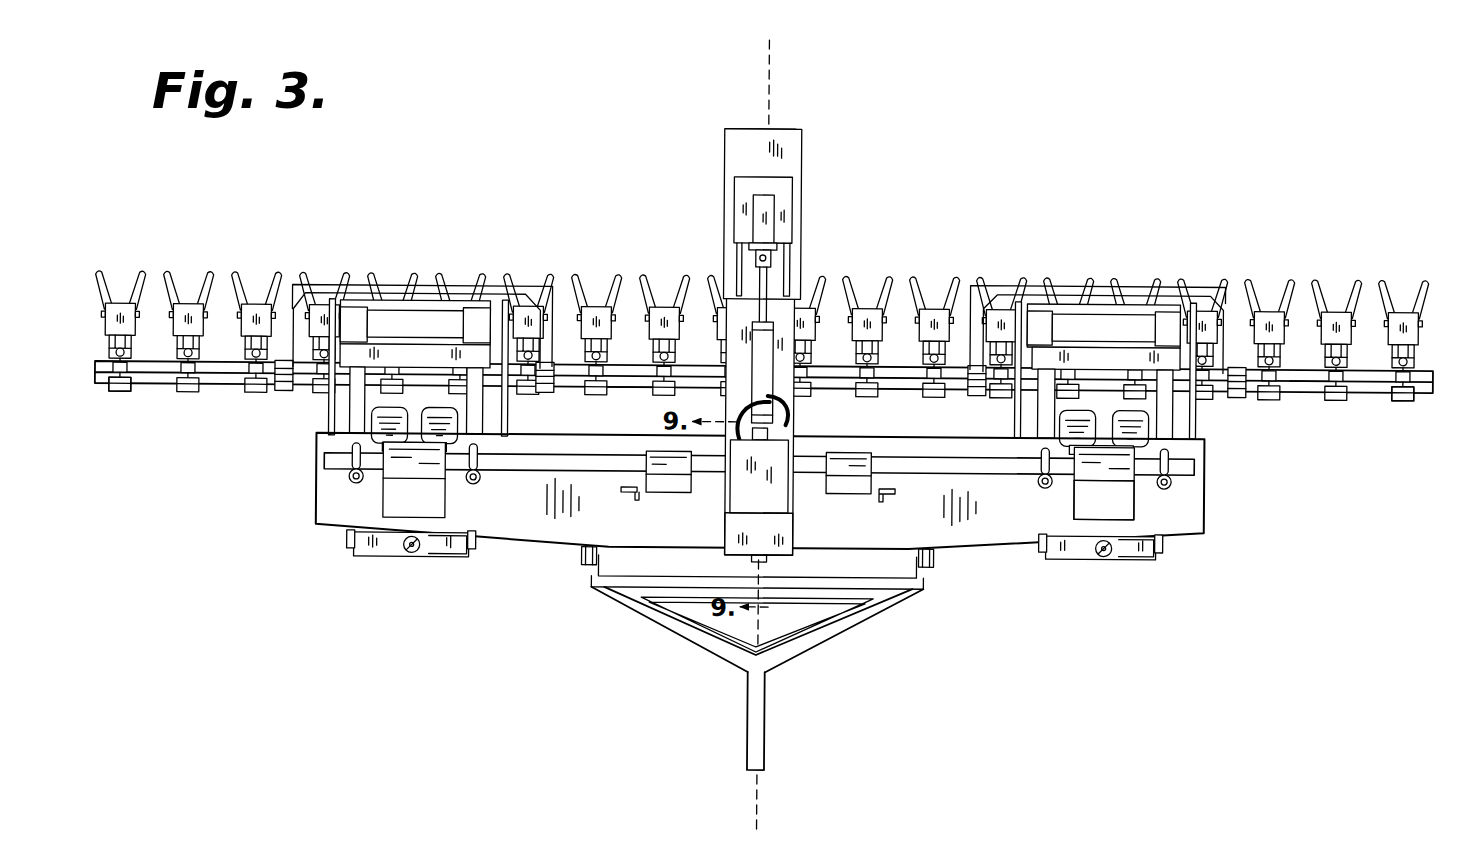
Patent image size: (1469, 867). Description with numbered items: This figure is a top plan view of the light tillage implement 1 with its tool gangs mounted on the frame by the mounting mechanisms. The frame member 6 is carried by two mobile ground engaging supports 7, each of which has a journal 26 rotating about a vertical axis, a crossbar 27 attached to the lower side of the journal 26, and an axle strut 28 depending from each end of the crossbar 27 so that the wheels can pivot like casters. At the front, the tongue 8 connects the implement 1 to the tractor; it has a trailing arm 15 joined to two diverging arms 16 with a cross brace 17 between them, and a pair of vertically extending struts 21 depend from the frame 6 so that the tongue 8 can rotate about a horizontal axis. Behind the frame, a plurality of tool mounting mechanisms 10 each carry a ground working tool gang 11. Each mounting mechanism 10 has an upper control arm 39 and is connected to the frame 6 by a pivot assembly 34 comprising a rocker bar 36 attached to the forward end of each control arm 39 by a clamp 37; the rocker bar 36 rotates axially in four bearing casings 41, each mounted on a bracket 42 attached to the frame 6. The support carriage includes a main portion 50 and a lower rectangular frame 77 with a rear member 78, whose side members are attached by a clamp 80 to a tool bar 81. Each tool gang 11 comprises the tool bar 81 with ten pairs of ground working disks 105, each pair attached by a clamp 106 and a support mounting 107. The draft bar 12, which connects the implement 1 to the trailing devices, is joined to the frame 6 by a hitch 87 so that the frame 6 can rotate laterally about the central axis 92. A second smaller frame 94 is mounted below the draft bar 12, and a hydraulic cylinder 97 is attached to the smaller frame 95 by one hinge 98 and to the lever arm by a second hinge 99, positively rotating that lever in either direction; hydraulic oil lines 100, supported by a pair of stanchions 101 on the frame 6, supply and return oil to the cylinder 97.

The implement 1 is at (530, 590).
The frame member 6 is at (1006, 538).
The mobile ground engaging supports 7 is at (373, 558).
The tongue 8 is at (838, 627).
The tool mounting mechanisms 10 is at (360, 386).
The ground working tool gangs 11 is at (218, 381).
The draft bar 12 is at (789, 159).
The trailing arm 15 is at (751, 735).
The diverging arms 16 is at (717, 643).
The cross brace 17 is at (783, 594).
The vertically extending struts 21 is at (581, 561).
The journal 26 is at (409, 555).
The crossbar 27 is at (436, 548).
The axle strut 28 is at (352, 541).
The pivot assembly 34 is at (748, 473).
The rocker bar 36 is at (969, 469).
The clamp 37 is at (356, 483).
The control arm 39 is at (358, 409).
The bearing casings 41 is at (438, 470).
The bracket 42 is at (1088, 511).
The main portion 50 is at (504, 404).
The rectangular frame 77 is at (500, 293).
The rear member 78 is at (393, 287).
The clamp 80 is at (283, 388).
The tool bar 81 is at (641, 389).
The hitch 87 is at (729, 537).
The central axis 92 is at (772, 45).
The second smaller frame 94 is at (784, 198).
The smaller frame 95 is at (756, 217).
The hydraulic cylinder 97 is at (759, 334).
The hinge 98 is at (772, 259).
The second hinge 99 is at (773, 434).
The hydraulic oil lines 100 is at (778, 406).
The stanchions 101 is at (623, 500).
The ground working disks 105 is at (134, 291).
The clamp 106 is at (117, 394).
The support mounting 107 is at (188, 313).